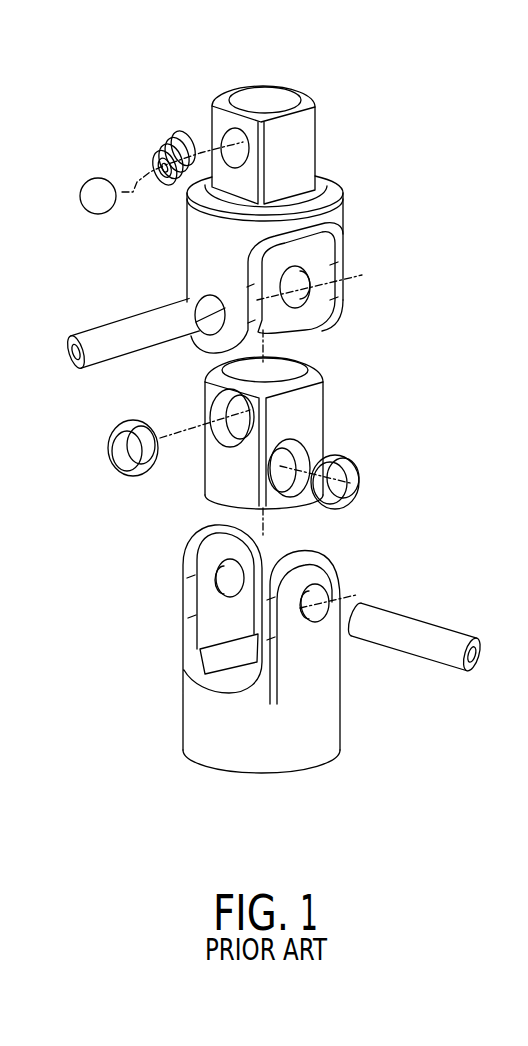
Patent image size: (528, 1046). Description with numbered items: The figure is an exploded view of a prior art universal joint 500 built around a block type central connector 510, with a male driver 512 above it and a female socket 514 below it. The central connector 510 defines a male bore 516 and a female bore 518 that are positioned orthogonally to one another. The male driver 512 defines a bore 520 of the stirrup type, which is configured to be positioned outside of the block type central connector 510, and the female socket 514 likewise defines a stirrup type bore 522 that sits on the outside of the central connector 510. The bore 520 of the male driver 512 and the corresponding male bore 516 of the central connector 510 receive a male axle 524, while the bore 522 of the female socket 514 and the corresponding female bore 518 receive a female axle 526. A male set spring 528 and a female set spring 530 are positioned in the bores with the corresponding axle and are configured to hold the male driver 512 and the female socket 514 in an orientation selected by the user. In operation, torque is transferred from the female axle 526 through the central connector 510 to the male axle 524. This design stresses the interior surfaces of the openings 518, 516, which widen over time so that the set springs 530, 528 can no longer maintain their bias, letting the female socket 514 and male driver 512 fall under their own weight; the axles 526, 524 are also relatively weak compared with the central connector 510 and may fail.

The universal joint 500 is at (432, 112).
The central connector 510 is at (314, 397).
The male driver 512 is at (338, 182).
The female socket 514 is at (200, 730).
The male bore 516 is at (217, 438).
The female bore 518 is at (308, 456).
The bore of the male driver 520 is at (318, 292).
The bore of the female socket 522 is at (335, 586).
The male axle 524 is at (105, 332).
The female axle 526 is at (405, 640).
The male set spring 528 is at (116, 433).
The female set spring 530 is at (360, 492).